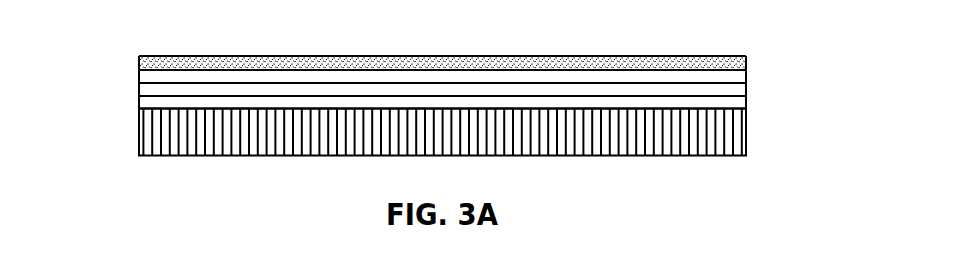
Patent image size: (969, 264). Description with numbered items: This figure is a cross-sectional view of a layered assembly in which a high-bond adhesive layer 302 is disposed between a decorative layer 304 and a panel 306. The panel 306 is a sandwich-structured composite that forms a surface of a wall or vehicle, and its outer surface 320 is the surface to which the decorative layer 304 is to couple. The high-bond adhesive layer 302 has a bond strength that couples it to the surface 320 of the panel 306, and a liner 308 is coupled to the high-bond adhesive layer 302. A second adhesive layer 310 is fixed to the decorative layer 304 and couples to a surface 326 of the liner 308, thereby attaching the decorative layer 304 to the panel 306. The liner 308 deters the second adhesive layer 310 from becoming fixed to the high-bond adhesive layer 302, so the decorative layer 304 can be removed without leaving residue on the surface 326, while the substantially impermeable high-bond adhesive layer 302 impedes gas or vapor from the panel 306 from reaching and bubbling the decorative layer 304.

The decorative layer 304 is at (138, 62).
The second adhesive layer 310 is at (746, 75).
The surface of the liner 326 is at (538, 82).
The liner 308 is at (138, 85).
The high-bond adhesive layer 302 is at (746, 100).
The surface of the panel 320 is at (610, 108).
The panel 306 is at (138, 130).